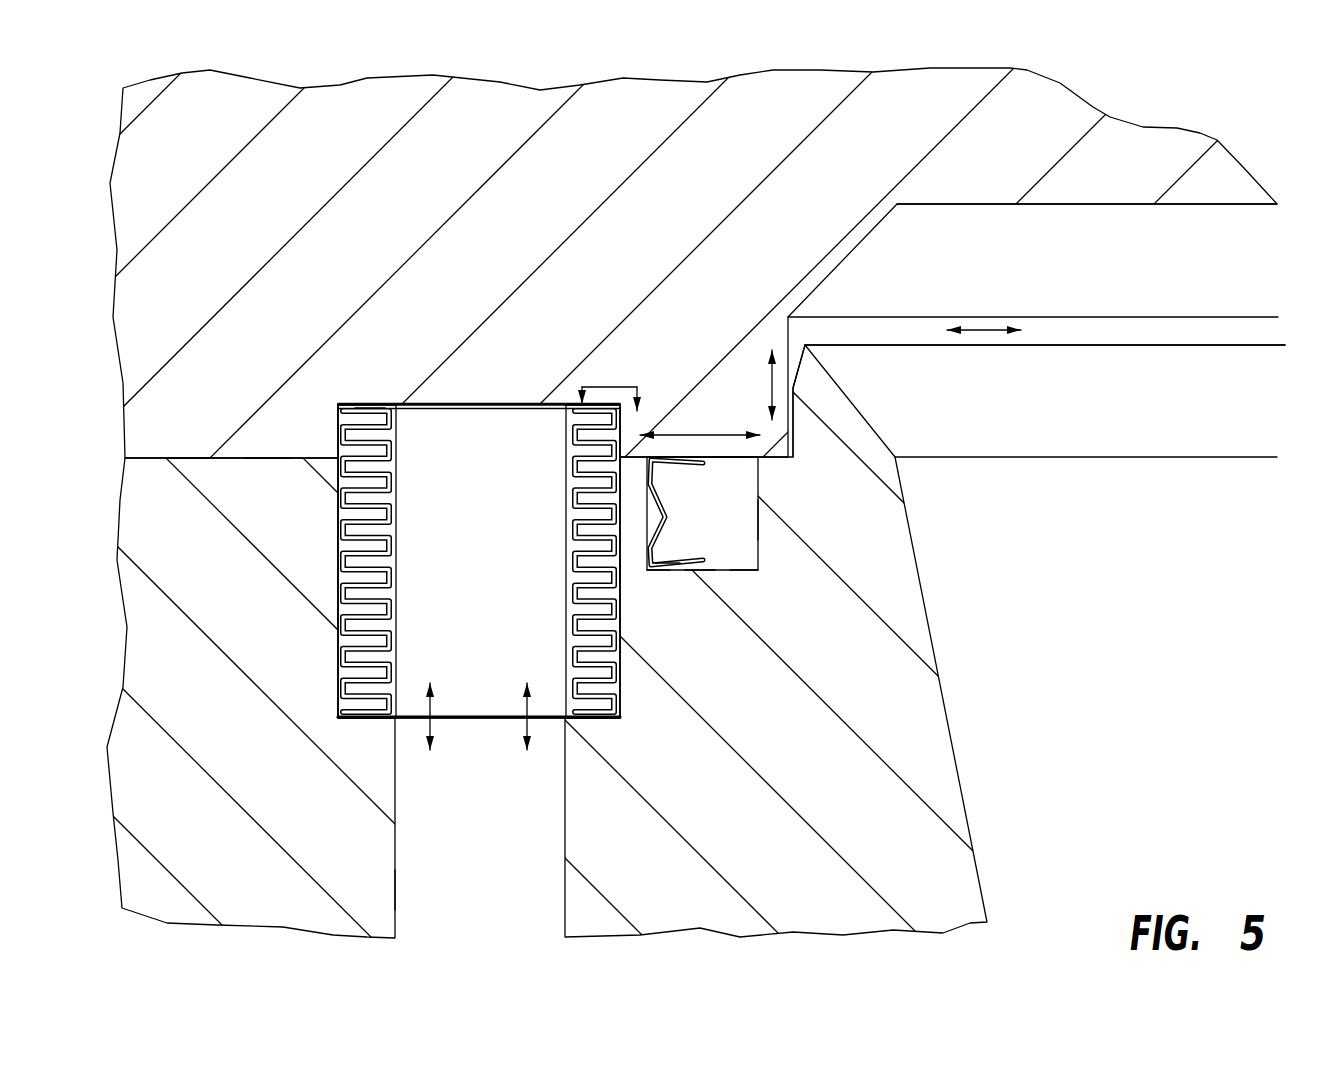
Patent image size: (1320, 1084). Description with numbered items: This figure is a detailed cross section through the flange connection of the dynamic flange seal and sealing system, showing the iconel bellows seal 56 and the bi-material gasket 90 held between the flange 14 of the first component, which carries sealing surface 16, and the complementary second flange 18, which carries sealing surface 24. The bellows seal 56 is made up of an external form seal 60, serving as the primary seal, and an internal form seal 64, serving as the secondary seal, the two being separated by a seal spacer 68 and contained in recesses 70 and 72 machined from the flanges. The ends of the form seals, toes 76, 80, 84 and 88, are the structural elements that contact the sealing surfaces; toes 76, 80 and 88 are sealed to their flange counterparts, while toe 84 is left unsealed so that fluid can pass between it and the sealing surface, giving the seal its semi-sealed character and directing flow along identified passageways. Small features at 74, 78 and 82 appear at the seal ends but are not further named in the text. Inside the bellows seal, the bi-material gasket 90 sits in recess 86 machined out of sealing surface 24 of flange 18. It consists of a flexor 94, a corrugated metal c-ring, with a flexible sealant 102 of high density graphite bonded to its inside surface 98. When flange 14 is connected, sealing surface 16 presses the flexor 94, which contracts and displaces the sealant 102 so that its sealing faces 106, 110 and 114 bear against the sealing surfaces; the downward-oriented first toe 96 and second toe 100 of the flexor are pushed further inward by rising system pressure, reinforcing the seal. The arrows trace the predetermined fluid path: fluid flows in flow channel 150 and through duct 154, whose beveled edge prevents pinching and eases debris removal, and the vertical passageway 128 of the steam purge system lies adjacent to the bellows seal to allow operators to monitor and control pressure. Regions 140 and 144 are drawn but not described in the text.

The flange 14 is at (297, 182).
The sealing surface 16 is at (200, 456).
The second flange 18 is at (257, 621).
The sealing surface 24 is at (278, 462).
The iconel bellows seal 56 is at (388, 396).
The external form seal 60 is at (338, 630).
The internal form seal 64 is at (620, 673).
The seal spacer 68 is at (553, 408).
The recess 70 is at (413, 408).
The recess 72 is at (565, 718).
The top plate end 74 is at (353, 404).
The toe 76 is at (367, 404).
The bottom plate end 78 is at (353, 719).
The toe 80 is at (368, 720).
The bottom plate portion 82 is at (603, 719).
The toe 84 is at (584, 396).
The recess 86 is at (633, 570).
The toe 88 is at (590, 720).
The bi-material gasket 90 is at (657, 580).
The flexor 94 is at (671, 565).
The first toe 96 is at (698, 456).
The inside surface 98 is at (664, 495).
The second toe 100 is at (700, 572).
The flexible sealant 102 is at (733, 497).
The sealing face 106 is at (728, 458).
The sealing face 110 is at (746, 572).
The sealing face 114 is at (758, 519).
The vertical passageway 128 is at (412, 890).
The channel 140 is at (887, 214).
The third body 144 is at (868, 418).
The flow channel 150 is at (888, 327).
The duct 154 is at (795, 354).